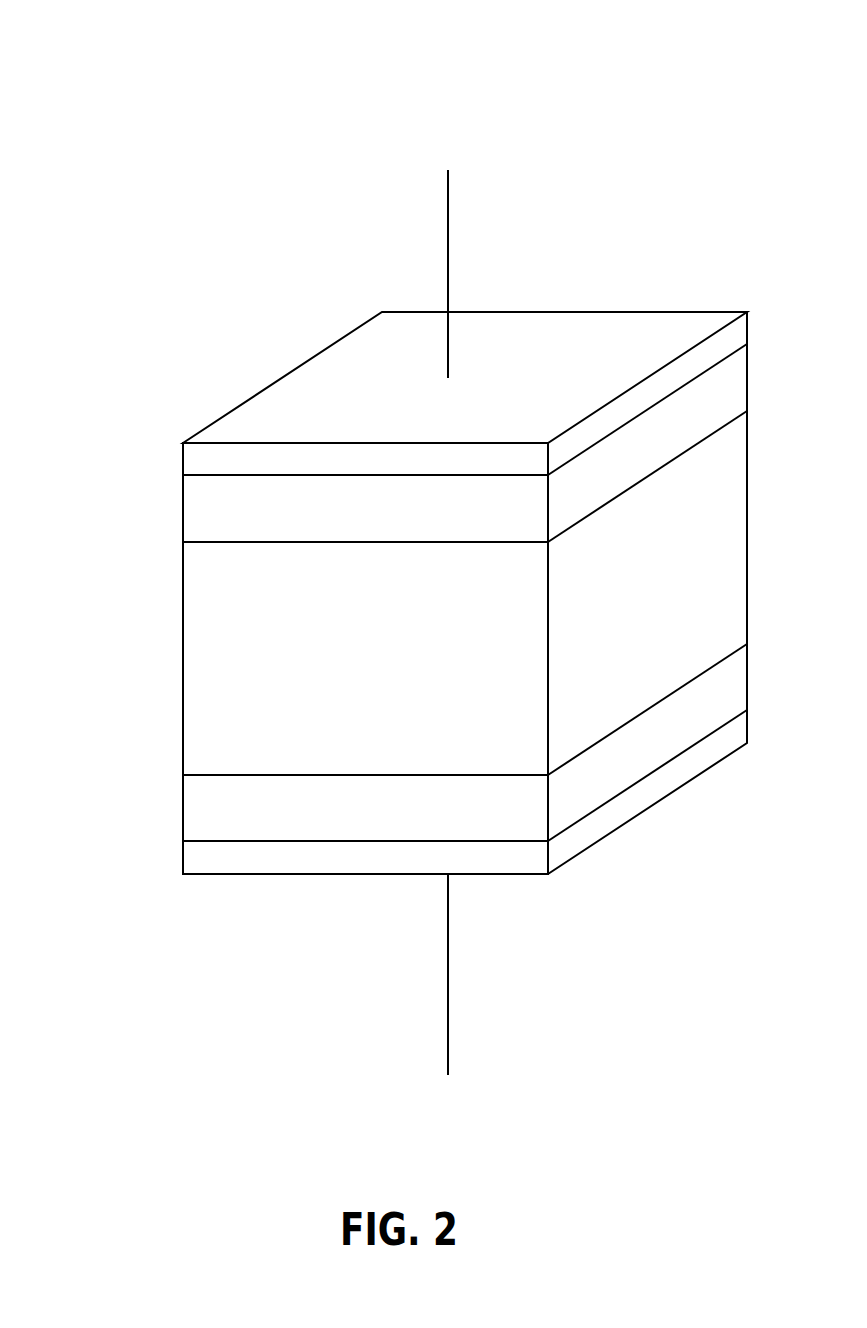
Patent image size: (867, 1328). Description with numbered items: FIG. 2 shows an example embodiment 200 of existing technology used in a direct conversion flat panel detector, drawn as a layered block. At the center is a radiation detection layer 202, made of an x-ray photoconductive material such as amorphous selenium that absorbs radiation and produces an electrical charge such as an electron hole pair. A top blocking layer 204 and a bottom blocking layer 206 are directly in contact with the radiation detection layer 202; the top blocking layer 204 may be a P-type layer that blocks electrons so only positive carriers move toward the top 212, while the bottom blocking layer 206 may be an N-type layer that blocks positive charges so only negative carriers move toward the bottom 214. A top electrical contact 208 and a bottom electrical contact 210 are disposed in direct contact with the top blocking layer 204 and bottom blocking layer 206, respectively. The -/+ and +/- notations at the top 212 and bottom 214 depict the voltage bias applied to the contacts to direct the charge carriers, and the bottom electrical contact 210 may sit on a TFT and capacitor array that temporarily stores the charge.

The example embodiment 200 is at (147, 58).
The radiation detection layer 202 is at (182, 658).
The top blocking layer 204 is at (182, 510).
The bottom blocking layer 206 is at (182, 808).
The top electrical contact 208 is at (182, 458).
The bottom electrical contact 210 is at (182, 858).
The top 212 is at (415, 152).
The bottom 214 is at (415, 1107).